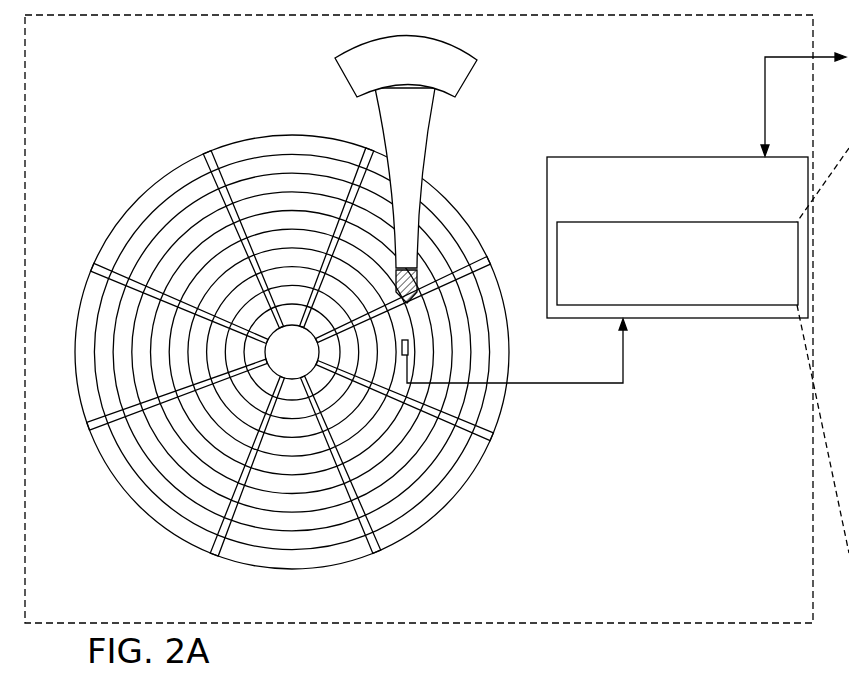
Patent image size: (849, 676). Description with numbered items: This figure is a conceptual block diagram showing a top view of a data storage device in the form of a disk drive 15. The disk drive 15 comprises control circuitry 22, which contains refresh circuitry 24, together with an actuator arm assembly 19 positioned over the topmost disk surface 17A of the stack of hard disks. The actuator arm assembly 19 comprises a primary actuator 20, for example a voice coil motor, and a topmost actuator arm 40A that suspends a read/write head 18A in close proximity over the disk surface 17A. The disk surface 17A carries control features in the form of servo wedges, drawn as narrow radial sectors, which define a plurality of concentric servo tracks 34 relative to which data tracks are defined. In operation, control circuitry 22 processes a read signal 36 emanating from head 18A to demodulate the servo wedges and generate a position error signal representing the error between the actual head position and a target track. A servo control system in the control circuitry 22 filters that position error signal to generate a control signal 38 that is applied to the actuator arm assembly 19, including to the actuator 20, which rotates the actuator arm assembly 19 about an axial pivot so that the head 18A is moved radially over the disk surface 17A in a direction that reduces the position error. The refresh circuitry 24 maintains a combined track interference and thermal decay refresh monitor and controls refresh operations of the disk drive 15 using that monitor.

The disk drive 15 is at (742, 626).
The topmost disk surface 17A is at (295, 346).
The read/write head 18A is at (420, 358).
The actuator arm assembly 19 is at (534, 652).
The primary actuator 20 is at (482, 83).
The control circuitry 22 is at (677, 237).
The refresh circuitry 24 is at (677, 263).
The servo tracks 34 is at (298, 160).
The read signal 36 is at (600, 386).
The control signal 38 is at (637, 100).
The topmost actuator arm 40A is at (432, 155).